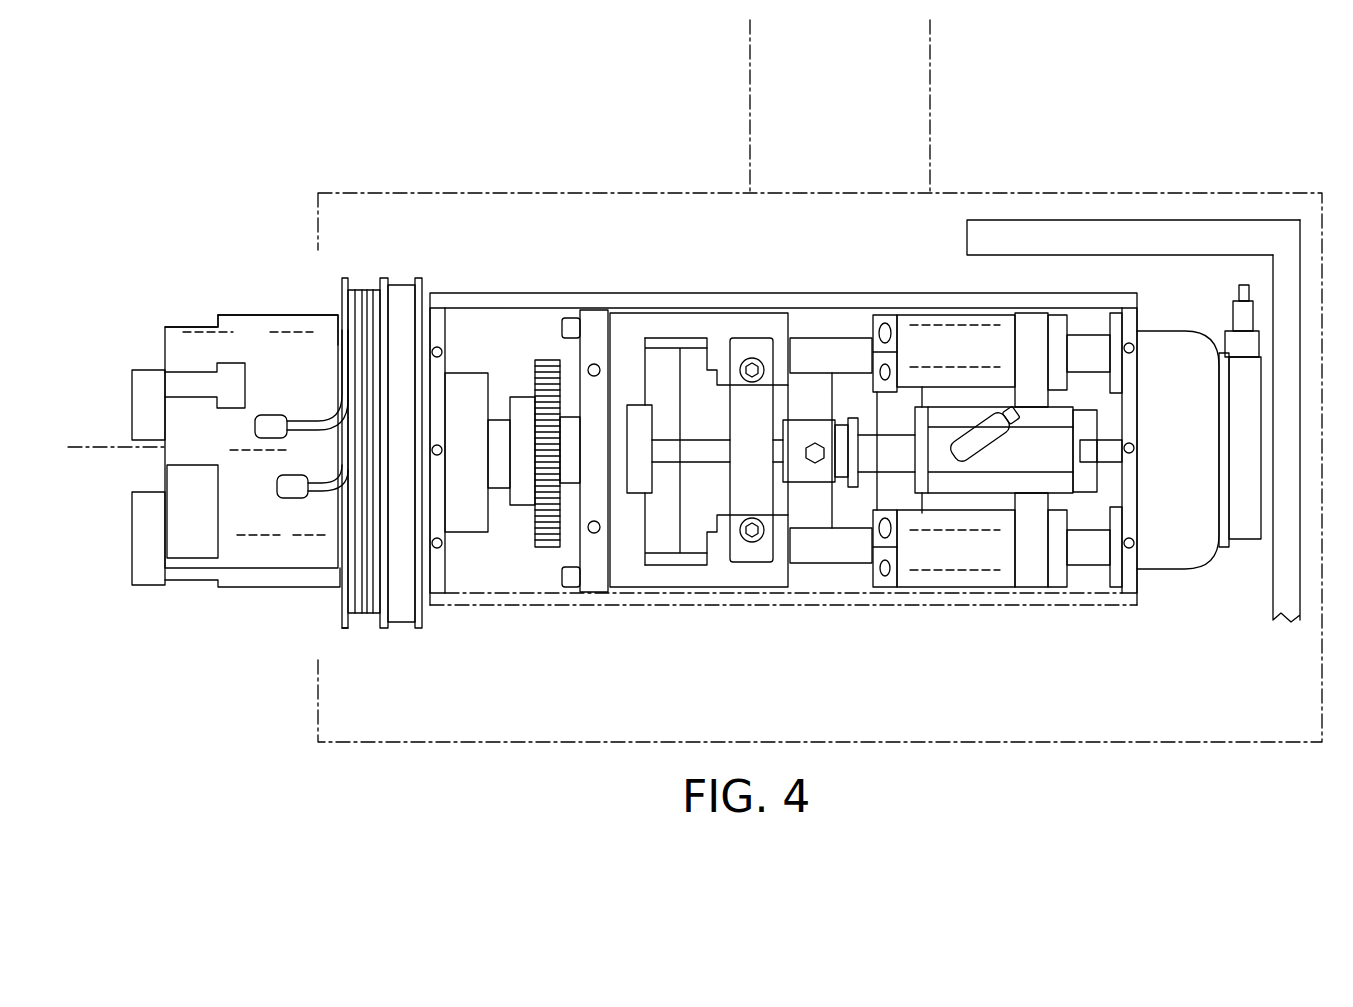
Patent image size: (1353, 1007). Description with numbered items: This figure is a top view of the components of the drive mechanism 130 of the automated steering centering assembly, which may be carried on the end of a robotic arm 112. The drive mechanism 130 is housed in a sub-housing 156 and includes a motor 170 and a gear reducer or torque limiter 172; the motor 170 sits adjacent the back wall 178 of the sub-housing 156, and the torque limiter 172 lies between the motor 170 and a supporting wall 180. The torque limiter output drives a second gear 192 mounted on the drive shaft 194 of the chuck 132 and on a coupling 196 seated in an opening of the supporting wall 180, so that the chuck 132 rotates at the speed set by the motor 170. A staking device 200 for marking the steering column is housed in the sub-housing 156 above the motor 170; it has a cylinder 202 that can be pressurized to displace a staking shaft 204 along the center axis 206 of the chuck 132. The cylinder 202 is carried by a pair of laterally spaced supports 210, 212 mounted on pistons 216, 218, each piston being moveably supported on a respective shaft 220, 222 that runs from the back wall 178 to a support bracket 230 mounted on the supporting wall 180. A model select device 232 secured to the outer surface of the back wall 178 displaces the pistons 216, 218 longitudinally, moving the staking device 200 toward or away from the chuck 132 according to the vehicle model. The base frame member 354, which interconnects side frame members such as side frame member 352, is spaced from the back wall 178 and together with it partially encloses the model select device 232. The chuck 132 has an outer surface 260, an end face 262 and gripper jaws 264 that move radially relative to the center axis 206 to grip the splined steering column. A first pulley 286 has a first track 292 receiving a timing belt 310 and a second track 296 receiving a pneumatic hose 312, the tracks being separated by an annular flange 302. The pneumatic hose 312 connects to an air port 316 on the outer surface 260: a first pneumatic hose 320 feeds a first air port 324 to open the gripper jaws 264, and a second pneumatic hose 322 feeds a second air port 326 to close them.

The robotic arm 112 is at (930, 93).
The drive mechanism 130 is at (660, 625).
The chuck 132 is at (205, 597).
The sub-housing 156 is at (725, 292).
The motor 170 is at (960, 393).
The torque limiter 172 is at (802, 385).
The back wall 178 is at (1130, 553).
The supporting wall 180 is at (600, 582).
The second gear 192 is at (535, 355).
The drive shaft 194 is at (495, 430).
The coupling 196 is at (640, 410).
The staking device 200 is at (988, 497).
The cylinder 202 is at (950, 485).
The staking shaft 204 is at (700, 455).
The center axis 206 is at (95, 440).
The support 210 is at (1030, 580).
The support 212 is at (1030, 320).
The piston 216 is at (960, 560).
The piston 218 is at (930, 340).
The shaft 220 is at (815, 555).
The shaft 222 is at (840, 340).
The support bracket 230 is at (748, 580).
The model select device 232 is at (1198, 580).
The outer surface 260 is at (200, 330).
The end face 262 is at (175, 335).
The gripper jaw 264 is at (145, 380).
The first pulley 286 is at (345, 290).
The first track 292 is at (420, 290).
The second track 296 is at (350, 624).
The annular flange 302 is at (395, 282).
The timing belt 310 is at (400, 285).
The pneumatic hose 312 is at (362, 262).
The air port 316 is at (268, 388).
The first pneumatic hose 320 is at (318, 413).
The second pneumatic hose 322 is at (323, 490).
The first air port 324 is at (255, 430).
The second air port 326 is at (283, 502).
The side frame member 352 is at (1172, 235).
The base frame member 354 is at (1297, 287).